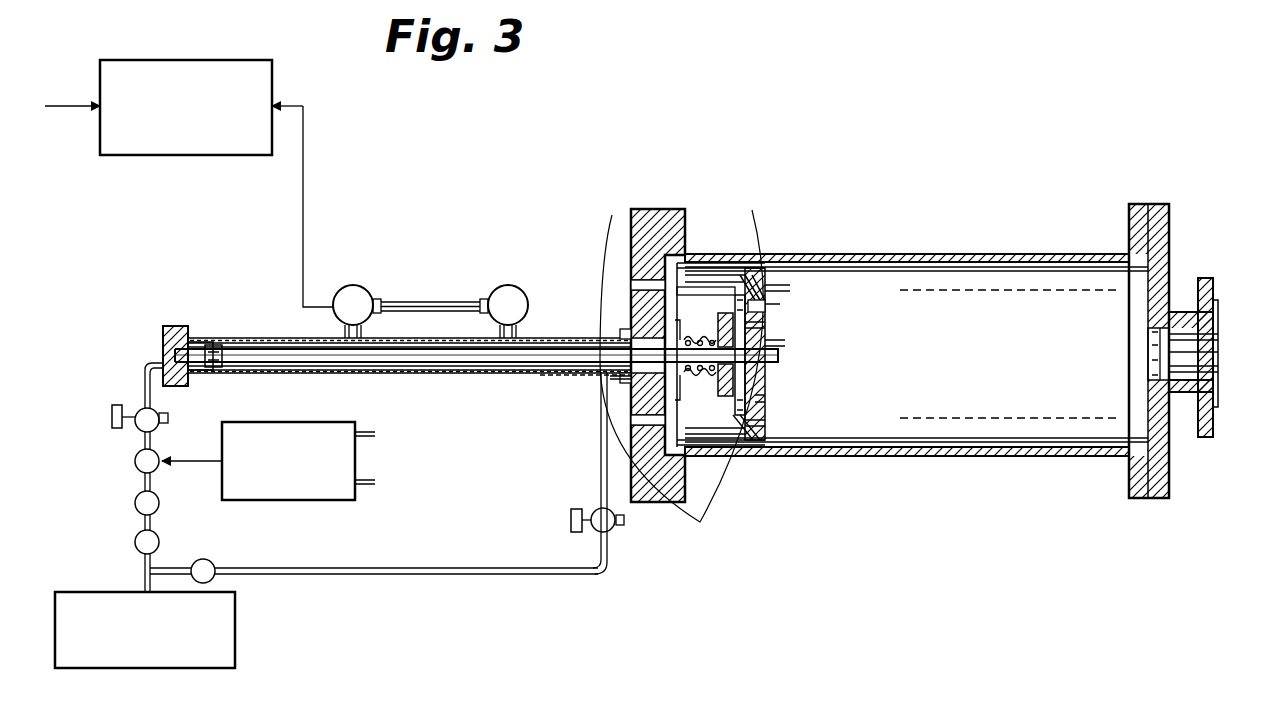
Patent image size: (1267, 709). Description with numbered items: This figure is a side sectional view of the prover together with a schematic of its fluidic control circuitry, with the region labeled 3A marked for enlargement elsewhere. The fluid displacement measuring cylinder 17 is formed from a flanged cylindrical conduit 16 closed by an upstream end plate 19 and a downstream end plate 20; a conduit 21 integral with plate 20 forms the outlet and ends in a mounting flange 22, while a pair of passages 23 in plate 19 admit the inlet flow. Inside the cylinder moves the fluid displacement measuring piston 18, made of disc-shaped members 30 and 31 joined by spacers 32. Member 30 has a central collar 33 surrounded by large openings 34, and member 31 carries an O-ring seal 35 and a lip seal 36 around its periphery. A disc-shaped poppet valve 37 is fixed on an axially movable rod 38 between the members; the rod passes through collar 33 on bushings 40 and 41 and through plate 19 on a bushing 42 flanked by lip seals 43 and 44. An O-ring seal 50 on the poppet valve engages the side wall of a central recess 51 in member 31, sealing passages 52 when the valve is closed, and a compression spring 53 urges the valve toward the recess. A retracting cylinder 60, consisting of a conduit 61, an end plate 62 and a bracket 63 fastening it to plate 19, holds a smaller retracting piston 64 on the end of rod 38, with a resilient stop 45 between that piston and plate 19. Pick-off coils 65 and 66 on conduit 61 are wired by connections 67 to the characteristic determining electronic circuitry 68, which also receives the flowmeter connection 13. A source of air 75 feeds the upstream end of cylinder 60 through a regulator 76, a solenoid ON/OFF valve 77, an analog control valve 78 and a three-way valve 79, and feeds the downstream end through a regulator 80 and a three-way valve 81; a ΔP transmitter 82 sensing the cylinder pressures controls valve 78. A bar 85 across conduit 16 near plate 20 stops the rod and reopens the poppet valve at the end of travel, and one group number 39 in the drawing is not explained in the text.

The connection 13 is at (64, 109).
The cylindrical conduit 16 is at (1062, 460).
The fluid displacement measuring cylinder 17 is at (958, 250).
The fluid displacement measuring piston 18 is at (782, 304).
The end plate 19 is at (631, 232).
The end plate 20 is at (1170, 225).
The conduit 21 is at (1185, 405).
The mounting flange 22 is at (1212, 285).
The passages 23 is at (630, 285).
The disc-shaped member 30 is at (665, 480).
The disc-shaped member 31 is at (770, 442).
The spacers 32 is at (760, 268).
The collar 33 is at (716, 382).
The large openings 34 is at (690, 325).
The O-ring seal 35 is at (757, 432).
The lip seal 36 is at (742, 442).
The poppet valve 37 is at (770, 330).
The rod 38 is at (780, 356).
The nozzle 39 is at (778, 345).
The bushing 40 is at (660, 340).
The bushing 41 is at (760, 425).
The bushing 42 is at (620, 385).
The lip seal 43 is at (555, 377).
The lip seal 44 is at (668, 342).
The resilient stop 45 is at (620, 345).
The O-ring seal 50 is at (745, 300).
The central recess 51 is at (770, 310).
The passages 52 is at (760, 400).
The compression spring 53 is at (752, 293).
The retracting cylinder 60 is at (532, 380).
The cylindrical conduit 61 is at (545, 335).
The end plate 62 is at (162, 340).
The bracket 63 is at (624, 328).
The retracting piston 64 is at (214, 362).
The pick-off coil 65 is at (352, 290).
The pick-off coil 66 is at (512, 290).
The electrical connections 67 is at (305, 218).
The characteristic determining electronic circuitry 68 is at (183, 157).
The source of air 75 is at (237, 628).
The regulator 76 is at (160, 540).
The solenoid actuated ON/OFF valve 77 is at (160, 501).
The analog control valve 78 is at (158, 452).
The solenoid actuated three-way valve 79 is at (160, 412).
The regulator 80 is at (212, 565).
The solenoid actuated three-way valve 81 is at (613, 529).
The ΔP transmitter 82 is at (300, 422).
The bar 85 is at (1150, 340).
The section detail 3A is at (608, 215).